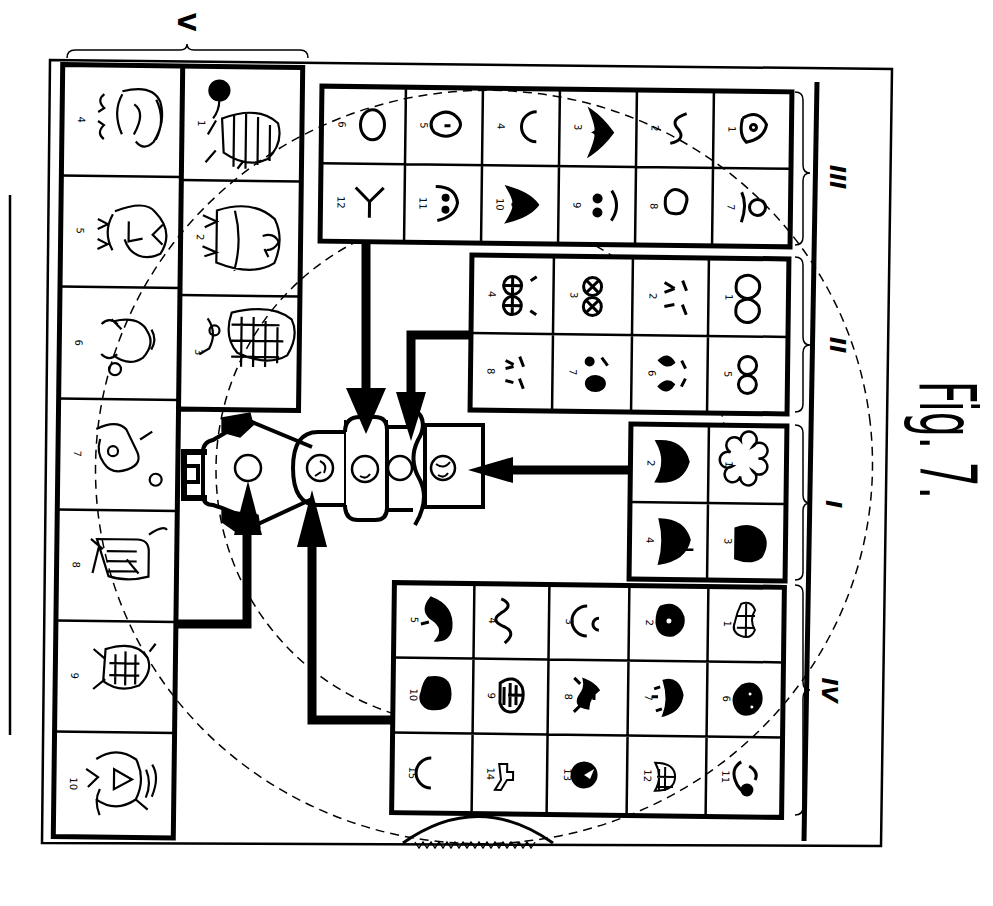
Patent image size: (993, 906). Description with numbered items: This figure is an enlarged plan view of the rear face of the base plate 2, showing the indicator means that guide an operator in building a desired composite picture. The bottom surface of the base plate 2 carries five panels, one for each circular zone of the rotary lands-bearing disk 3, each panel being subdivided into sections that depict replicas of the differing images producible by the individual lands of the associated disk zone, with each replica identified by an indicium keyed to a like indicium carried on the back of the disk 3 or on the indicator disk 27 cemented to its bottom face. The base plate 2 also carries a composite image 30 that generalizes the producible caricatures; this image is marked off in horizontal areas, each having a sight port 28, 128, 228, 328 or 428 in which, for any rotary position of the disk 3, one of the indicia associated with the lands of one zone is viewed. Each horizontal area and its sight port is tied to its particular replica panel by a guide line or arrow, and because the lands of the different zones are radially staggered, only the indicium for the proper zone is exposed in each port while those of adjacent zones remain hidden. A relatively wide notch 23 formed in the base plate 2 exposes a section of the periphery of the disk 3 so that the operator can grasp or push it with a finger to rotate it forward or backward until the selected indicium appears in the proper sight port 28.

The base plate 2 is at (883, 667).
The rotary lands-bearing disk 3 is at (487, 849).
The notch 23 is at (531, 834).
The indicator disk 27 is at (330, 447).
The sight port 28 is at (443, 480).
The sight port 128 is at (401, 480).
The sight port 228 is at (366, 481).
The sight port 328 is at (322, 480).
The sight port 428 is at (256, 478).
The composite image 30 is at (262, 542).